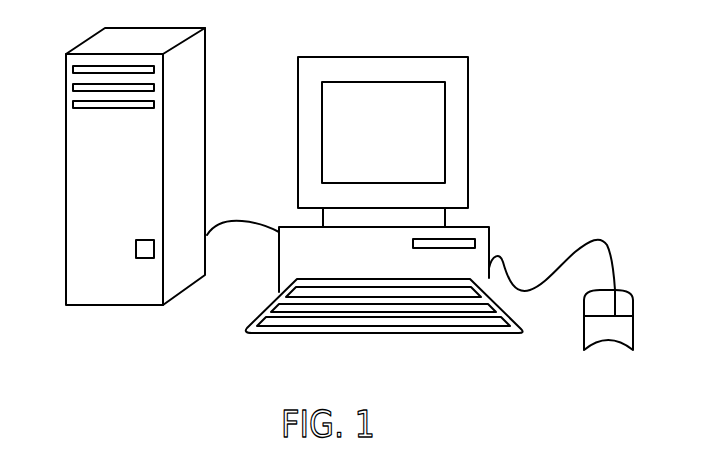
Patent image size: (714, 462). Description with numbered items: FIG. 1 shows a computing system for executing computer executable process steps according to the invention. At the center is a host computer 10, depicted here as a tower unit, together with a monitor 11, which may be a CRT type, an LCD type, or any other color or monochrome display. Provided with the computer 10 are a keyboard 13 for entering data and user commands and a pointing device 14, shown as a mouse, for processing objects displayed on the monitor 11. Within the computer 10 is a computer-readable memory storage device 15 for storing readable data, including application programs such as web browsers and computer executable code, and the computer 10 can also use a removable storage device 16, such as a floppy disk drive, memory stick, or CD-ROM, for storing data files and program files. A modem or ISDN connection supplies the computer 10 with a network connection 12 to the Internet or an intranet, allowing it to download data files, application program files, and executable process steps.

The host computer 10 is at (412, 57).
The monitor 11 is at (400, 141).
The network connection 12 is at (136, 293).
The keyboard 13 is at (405, 333).
The pointing device 14 is at (633, 330).
The computer-readable memory storage device 15 is at (82, 69).
The removable storage device 16 is at (82, 105).